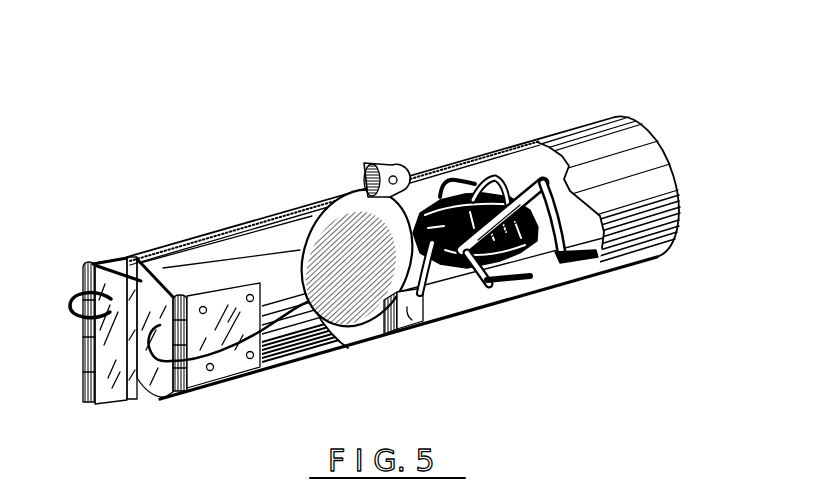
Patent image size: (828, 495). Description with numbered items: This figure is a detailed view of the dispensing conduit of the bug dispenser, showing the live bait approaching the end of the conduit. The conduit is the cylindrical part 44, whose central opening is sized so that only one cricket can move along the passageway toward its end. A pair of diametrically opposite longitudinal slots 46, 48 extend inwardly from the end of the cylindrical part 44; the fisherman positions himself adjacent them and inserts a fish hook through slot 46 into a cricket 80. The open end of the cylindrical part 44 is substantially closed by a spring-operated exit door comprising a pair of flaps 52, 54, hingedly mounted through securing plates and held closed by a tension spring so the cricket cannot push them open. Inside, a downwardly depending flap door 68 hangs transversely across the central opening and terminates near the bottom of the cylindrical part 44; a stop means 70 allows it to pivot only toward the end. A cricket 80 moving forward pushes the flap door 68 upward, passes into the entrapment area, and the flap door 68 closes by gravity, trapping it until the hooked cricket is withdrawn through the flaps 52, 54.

The cylindrical part 44 is at (552, 131).
The longitudinal slot 46 is at (212, 240).
The longitudinal slot 48 is at (135, 395).
The flap 52 is at (117, 350).
The flap 54 is at (158, 378).
The flap door 68 is at (363, 212).
The stop means 70 is at (412, 312).
The cricket 80 is at (478, 188).